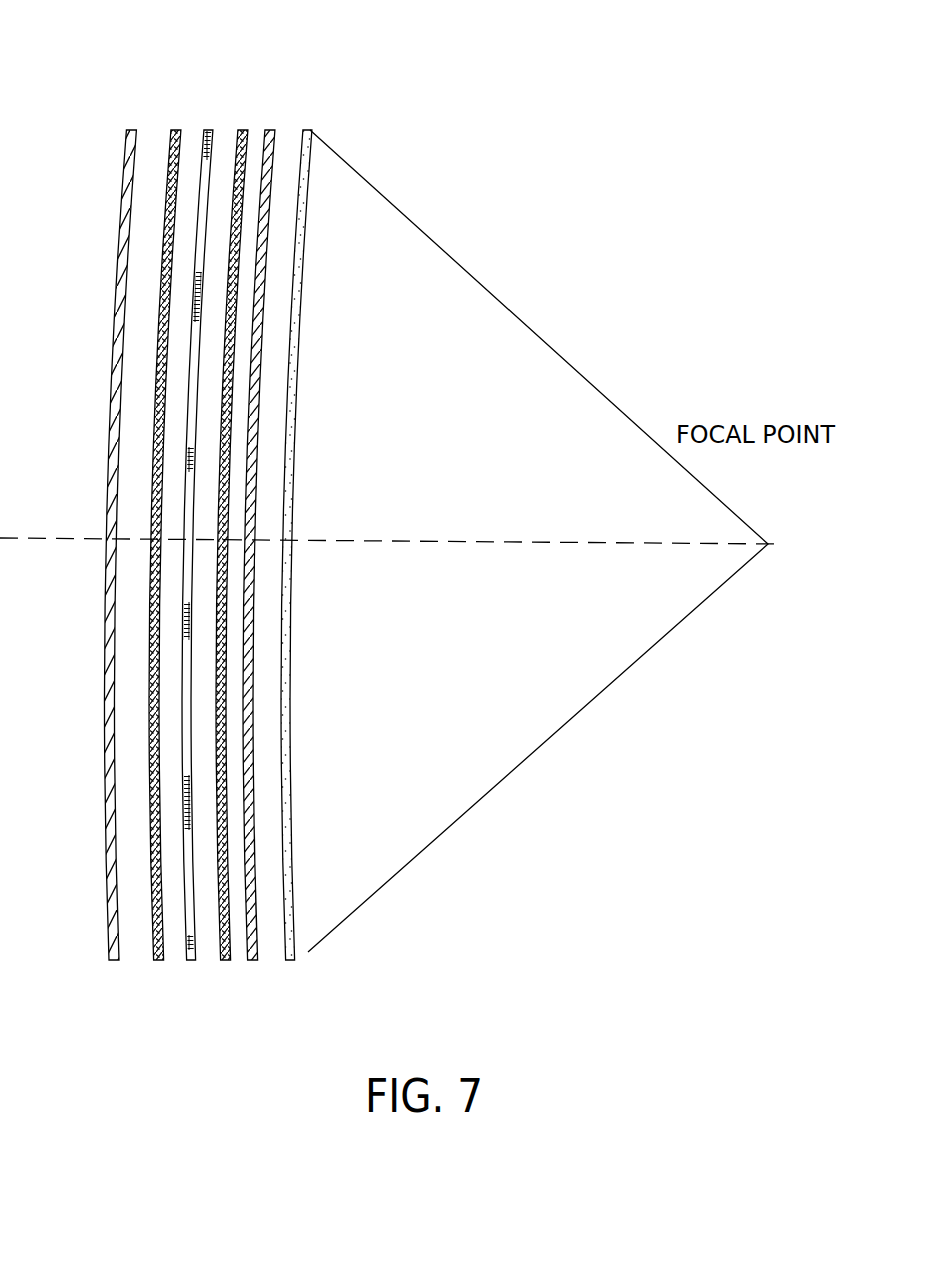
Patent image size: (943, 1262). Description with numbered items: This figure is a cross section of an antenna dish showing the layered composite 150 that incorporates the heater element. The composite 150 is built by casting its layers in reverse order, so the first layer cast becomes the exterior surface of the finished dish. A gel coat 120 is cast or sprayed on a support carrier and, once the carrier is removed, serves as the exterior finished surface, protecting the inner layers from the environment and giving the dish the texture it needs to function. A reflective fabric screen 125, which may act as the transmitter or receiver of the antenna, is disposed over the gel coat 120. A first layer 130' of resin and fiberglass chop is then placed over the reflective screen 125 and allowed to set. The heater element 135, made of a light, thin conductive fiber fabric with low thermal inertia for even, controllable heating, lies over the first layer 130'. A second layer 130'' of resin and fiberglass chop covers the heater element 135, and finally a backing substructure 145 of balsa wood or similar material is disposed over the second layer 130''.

The composite 150 is at (213, 95).
The backing substructure 145 is at (113, 958).
The second layer of resin and fiberglass chop 130'' is at (138, 591).
The heater element 135 is at (193, 960).
The first layer of resin and fiberglass chop 130' is at (231, 579).
The reflective fabric screen 125 is at (255, 958).
The gel coat layer 120 is at (292, 962).